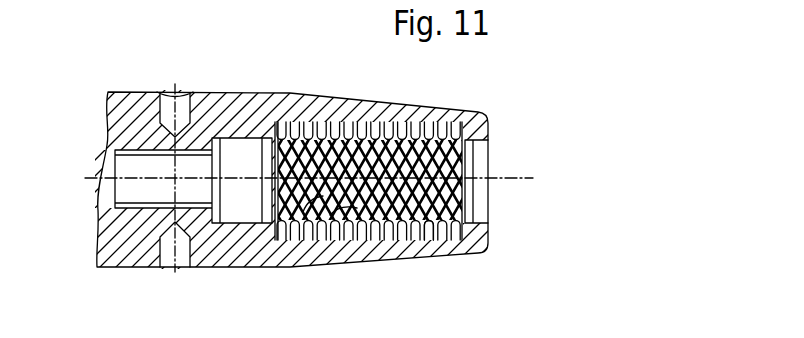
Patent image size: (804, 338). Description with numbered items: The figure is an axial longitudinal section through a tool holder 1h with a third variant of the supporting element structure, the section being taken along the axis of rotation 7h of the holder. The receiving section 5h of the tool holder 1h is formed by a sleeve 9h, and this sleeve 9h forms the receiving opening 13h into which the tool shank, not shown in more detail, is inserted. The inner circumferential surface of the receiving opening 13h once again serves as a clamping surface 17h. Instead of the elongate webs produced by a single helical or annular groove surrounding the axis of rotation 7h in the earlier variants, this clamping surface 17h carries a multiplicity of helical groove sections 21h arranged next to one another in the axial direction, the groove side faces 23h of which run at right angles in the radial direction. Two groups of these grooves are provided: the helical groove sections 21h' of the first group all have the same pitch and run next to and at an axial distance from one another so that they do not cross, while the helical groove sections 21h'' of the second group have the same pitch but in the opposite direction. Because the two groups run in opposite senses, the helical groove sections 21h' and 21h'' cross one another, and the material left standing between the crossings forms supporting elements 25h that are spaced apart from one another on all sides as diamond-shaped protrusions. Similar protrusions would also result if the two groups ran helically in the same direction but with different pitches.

The tool holder 1h is at (121, 83).
The receiving section 5h is at (330, 93).
The longitudinal axis 7h is at (512, 170).
The sleeve 9h is at (291, 99).
The receiving opening 13h is at (470, 207).
The clamping surface 17h is at (362, 241).
The helical groove sections 21h is at (457, 262).
The helical groove sections of the first group 21h' is at (285, 257).
The helical groove sections of the second group 21h'' is at (338, 265).
The groove side faces 23h is at (428, 127).
The supporting elements 25h is at (362, 127).